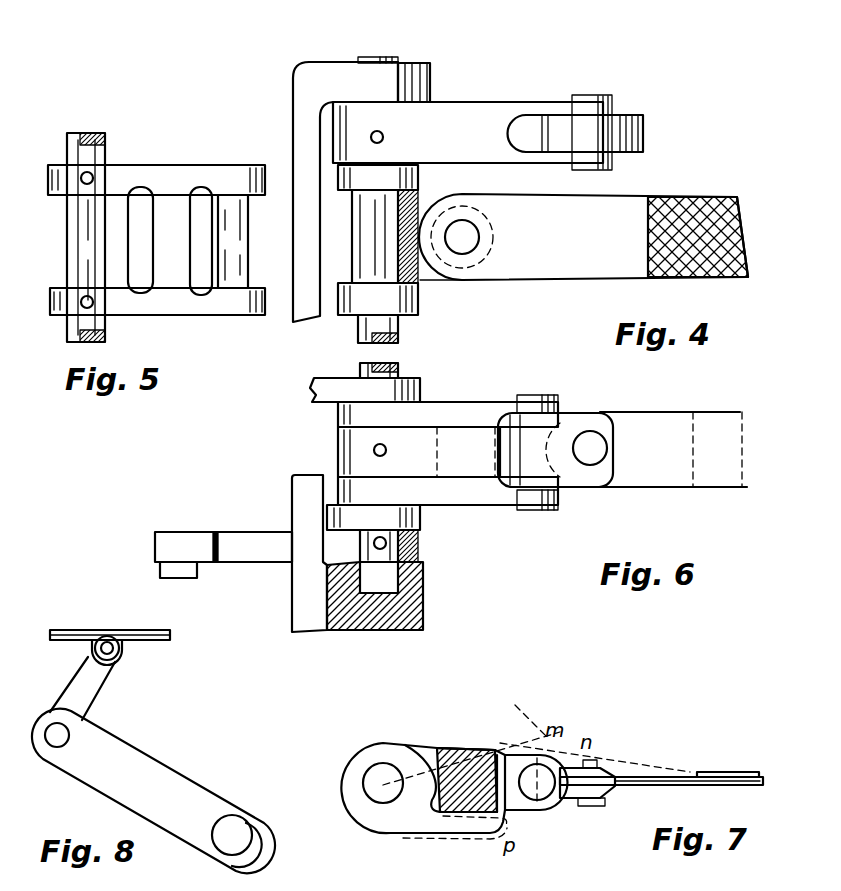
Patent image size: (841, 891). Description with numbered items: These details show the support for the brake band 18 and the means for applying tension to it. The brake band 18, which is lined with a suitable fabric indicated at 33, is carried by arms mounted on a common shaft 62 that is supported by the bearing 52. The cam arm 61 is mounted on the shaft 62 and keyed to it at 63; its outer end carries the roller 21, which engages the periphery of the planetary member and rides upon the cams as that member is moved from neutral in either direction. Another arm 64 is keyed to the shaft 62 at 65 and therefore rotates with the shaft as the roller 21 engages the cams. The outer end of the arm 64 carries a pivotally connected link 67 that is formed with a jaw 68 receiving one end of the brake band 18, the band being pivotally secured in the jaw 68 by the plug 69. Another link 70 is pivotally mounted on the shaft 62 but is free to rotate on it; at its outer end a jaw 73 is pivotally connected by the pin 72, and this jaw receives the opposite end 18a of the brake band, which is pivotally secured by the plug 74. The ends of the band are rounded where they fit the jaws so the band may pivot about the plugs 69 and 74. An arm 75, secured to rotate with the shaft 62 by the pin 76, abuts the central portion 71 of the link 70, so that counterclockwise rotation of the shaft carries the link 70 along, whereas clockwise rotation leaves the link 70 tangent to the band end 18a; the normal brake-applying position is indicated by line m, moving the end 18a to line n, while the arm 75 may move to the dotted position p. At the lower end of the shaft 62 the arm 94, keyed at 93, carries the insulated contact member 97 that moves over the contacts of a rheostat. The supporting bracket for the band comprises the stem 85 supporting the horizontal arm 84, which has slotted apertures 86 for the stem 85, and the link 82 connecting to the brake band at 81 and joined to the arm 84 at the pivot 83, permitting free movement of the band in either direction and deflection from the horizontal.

In FIG. 4, the brake band 18 is at (583, 237).
In FIG. 8, the brake band 18 is at (152, 642).
In FIG. 6, the opposite end of the brake band 18a is at (655, 412).
In FIG. 7, the opposite end of the brake band 18a is at (703, 788).
In FIG. 4, the roller 21 is at (643, 133).
In FIG. 4, the fabric lining 33 is at (733, 197).
In FIG. 8, the fabric lining 33 is at (120, 630).
In FIG. 7, the fabric lining 33 is at (752, 773).
In FIG. 4, the bearing 52 is at (298, 82).
In FIG. 6, the bearing 52 is at (297, 503).
In FIG. 4, the cam arm 61 is at (472, 132).
In FIG. 5, the shaft 62 is at (78, 145).
In FIG. 4, the shaft 62 is at (375, 60).
In FIG. 6, the shaft 62 is at (398, 366).
In FIG. 7, the shaft 62 is at (368, 778).
In FIG. 4, the key 63 is at (385, 137).
In FIG. 5, the arm 64 is at (168, 173).
In FIG. 4, the arm 64 is at (416, 180).
In FIG. 6, the arm 64 is at (350, 379).
In FIG. 5, the key 65 is at (82, 175).
In FIG. 5, the link 67 is at (237, 282).
In FIG. 4, the link 67 is at (352, 248).
In FIG. 4, the jaw 68 is at (466, 281).
In FIG. 4, the plug 69 is at (484, 232).
In FIG. 6, the link 70 is at (480, 395).
In FIG. 7, the link 70 is at (431, 748).
In FIG. 7, the central portion of the link 71 is at (486, 735).
In FIG. 6, the pin 72 is at (537, 396).
In FIG. 7, the pin 72 is at (540, 802).
In FIG. 6, the jaw 73 is at (568, 413).
In FIG. 7, the jaw 73 is at (612, 790).
In FIG. 6, the plug 74 is at (608, 440).
In FIG. 7, the plug 74 is at (592, 806).
In FIG. 6, the arm 75 is at (419, 452).
In FIG. 7, the arm 75 is at (395, 826).
In FIG. 6, the pin 76 is at (388, 450).
In FIG. 8, the connection 81 is at (115, 660).
In FIG. 8, the link 82 is at (78, 678).
In FIG. 8, the pivot 83 is at (70, 742).
In FIG. 8, the horizontal arm 84 is at (153, 791).
In FIG. 8, the stem 85 is at (214, 830).
In FIG. 8, the slotted apertures 86 is at (260, 846).
In FIG. 6, the key 93 is at (386, 552).
In FIG. 6, the arm 94 is at (420, 546).
In FIG. 6, the insulated contact member 97 is at (165, 547).